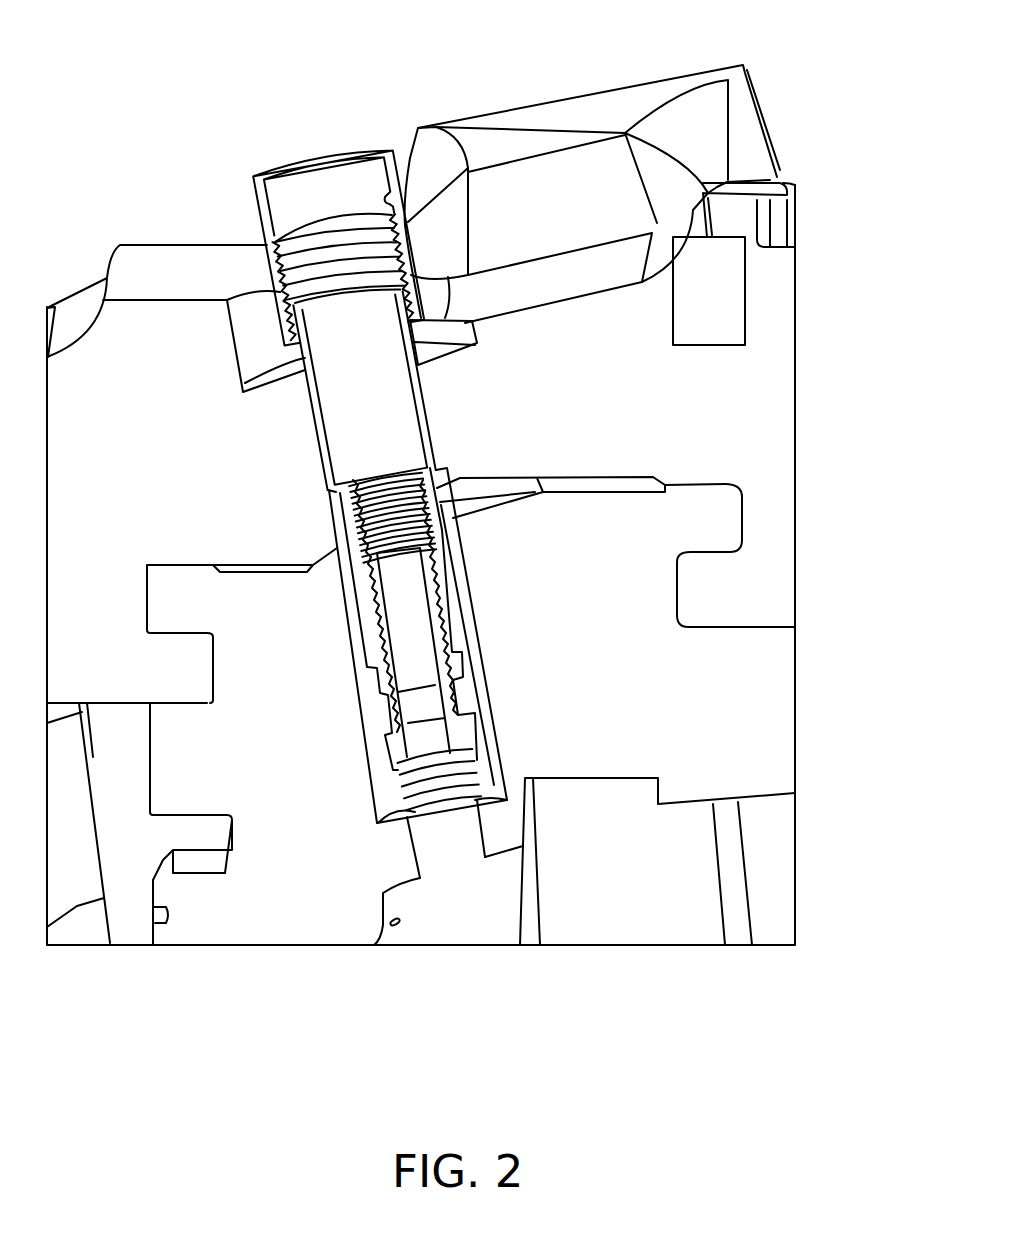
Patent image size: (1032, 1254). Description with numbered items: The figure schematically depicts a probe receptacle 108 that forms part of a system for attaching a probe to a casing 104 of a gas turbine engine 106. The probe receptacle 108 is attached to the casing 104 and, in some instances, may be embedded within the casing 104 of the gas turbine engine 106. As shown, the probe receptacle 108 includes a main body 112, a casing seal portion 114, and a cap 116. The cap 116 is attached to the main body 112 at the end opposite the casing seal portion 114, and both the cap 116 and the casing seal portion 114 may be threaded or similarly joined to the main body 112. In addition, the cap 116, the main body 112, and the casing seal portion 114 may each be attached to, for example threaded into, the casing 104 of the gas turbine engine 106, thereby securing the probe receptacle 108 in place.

The casing 104 is at (563, 98).
The gas turbine engine 106 is at (830, 47).
The probe receptacle 108 is at (356, 493).
The main body 112 is at (322, 460).
The casing seal portion 114 is at (463, 713).
The cap 116 is at (258, 207).